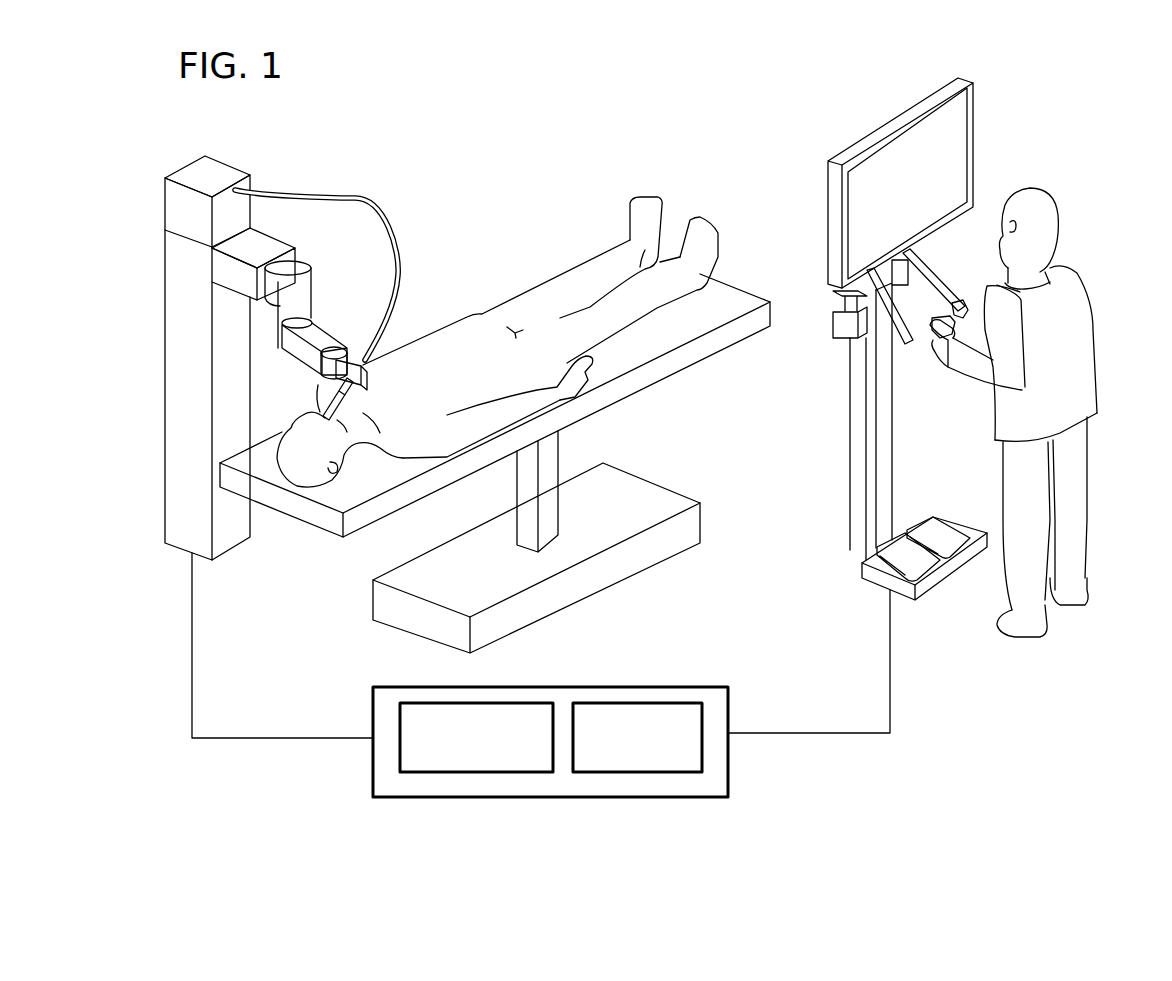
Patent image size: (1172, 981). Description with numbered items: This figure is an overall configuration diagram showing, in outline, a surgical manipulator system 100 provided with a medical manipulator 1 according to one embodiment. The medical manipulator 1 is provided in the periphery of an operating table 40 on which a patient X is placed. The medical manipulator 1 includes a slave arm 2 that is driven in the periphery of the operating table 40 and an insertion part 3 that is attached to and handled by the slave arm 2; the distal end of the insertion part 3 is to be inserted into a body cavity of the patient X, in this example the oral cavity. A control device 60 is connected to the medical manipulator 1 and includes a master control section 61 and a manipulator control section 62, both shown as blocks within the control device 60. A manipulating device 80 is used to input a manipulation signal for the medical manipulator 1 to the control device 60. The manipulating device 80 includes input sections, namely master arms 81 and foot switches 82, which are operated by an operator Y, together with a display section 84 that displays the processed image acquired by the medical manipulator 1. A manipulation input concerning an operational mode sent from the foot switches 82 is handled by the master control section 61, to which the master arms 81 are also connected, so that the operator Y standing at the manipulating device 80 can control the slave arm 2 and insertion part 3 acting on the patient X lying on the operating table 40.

The surgical manipulator system 100 is at (510, 140).
The medical manipulator 1 is at (364, 178).
The slave arm 2 is at (308, 303).
The insertion part 3 is at (388, 218).
The operating table 40 is at (287, 517).
The control device 60 is at (373, 705).
The master control section 61 is at (642, 703).
The manipulator control section 62 is at (523, 703).
The manipulating device 80 is at (1040, 82).
The master arms 81 is at (940, 270).
The foot switches 82 is at (950, 533).
The display section 84 is at (888, 158).
The patient X is at (534, 300).
The operator Y is at (1070, 318).